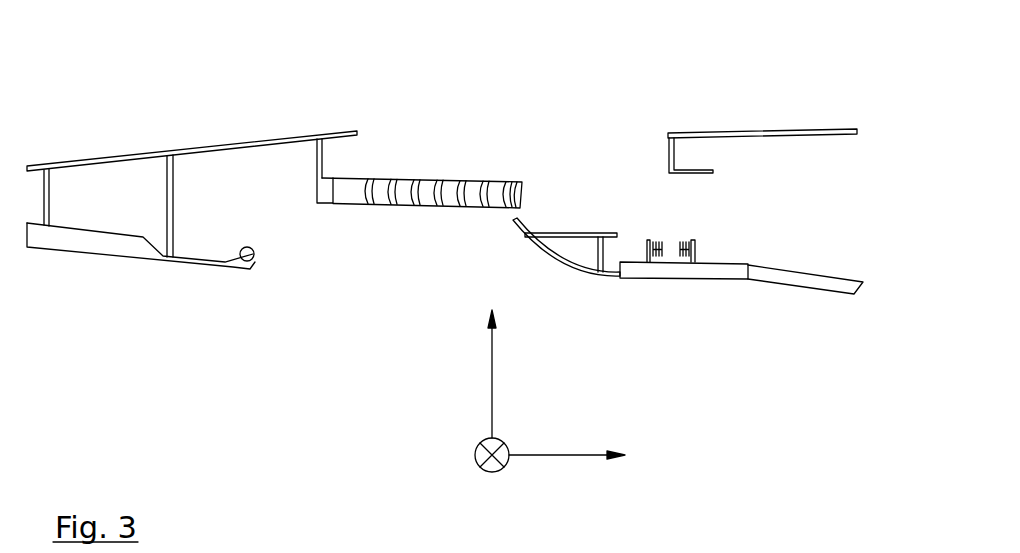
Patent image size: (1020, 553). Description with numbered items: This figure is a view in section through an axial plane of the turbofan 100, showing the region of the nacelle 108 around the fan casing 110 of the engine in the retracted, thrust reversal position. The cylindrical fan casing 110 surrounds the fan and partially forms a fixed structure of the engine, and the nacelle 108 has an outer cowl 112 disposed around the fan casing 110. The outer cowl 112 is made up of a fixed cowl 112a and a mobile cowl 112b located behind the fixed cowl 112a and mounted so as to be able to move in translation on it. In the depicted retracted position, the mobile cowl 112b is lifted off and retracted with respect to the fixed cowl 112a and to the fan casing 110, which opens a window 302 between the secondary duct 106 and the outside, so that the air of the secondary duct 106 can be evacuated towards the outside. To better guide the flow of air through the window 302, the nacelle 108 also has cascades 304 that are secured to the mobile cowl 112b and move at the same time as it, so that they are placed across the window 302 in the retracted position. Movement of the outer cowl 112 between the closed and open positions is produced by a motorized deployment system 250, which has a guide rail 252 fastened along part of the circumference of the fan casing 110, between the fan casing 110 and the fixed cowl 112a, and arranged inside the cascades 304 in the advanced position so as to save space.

The turbofan 100 is at (764, 86).
The secondary duct 106 is at (670, 387).
The nacelle 108 is at (262, 69).
The fan casing 110 is at (797, 280).
The outer cowl 112 is at (182, 79).
The fixed cowl 112a is at (668, 133).
The mobile cowl 112b is at (110, 245).
The deployment system 250 is at (781, 211).
The guide rail 252 is at (647, 242).
The window 302 is at (422, 89).
The cascades 304 is at (390, 207).